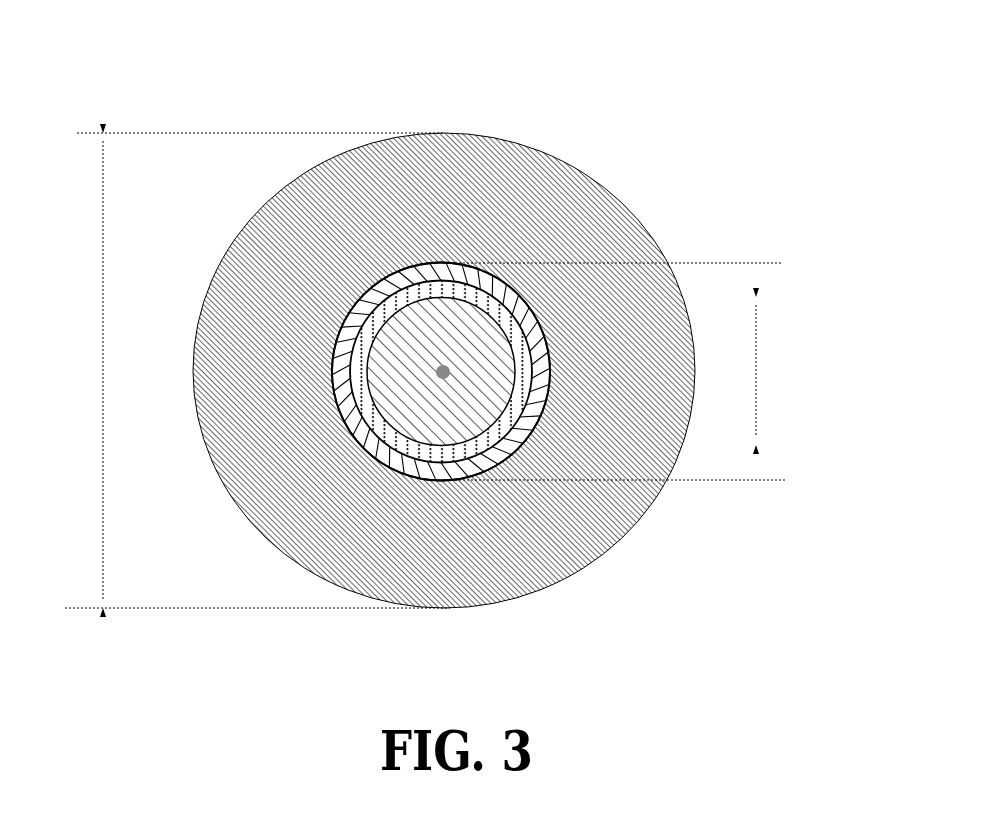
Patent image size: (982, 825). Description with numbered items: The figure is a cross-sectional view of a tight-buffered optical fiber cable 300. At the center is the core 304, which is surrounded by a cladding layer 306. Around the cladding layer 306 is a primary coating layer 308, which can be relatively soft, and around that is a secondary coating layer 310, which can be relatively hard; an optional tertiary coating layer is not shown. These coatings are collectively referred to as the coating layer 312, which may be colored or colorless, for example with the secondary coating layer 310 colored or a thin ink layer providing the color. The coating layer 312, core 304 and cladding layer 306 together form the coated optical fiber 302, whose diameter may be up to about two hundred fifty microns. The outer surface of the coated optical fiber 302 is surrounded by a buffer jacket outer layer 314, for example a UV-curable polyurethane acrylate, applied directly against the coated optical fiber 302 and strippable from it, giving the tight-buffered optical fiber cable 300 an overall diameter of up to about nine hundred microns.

The tight-buffered optical fiber cable 300 is at (425, 339).
The coated optical fiber 302 is at (477, 386).
The core 304 is at (487, 297).
The cladding layer 306 is at (415, 338).
The primary coating layer 308 is at (422, 462).
The secondary coating layer 310 is at (397, 468).
The coating layer 312 is at (443, 480).
The buffer jacket outer layer 314 is at (487, 273).